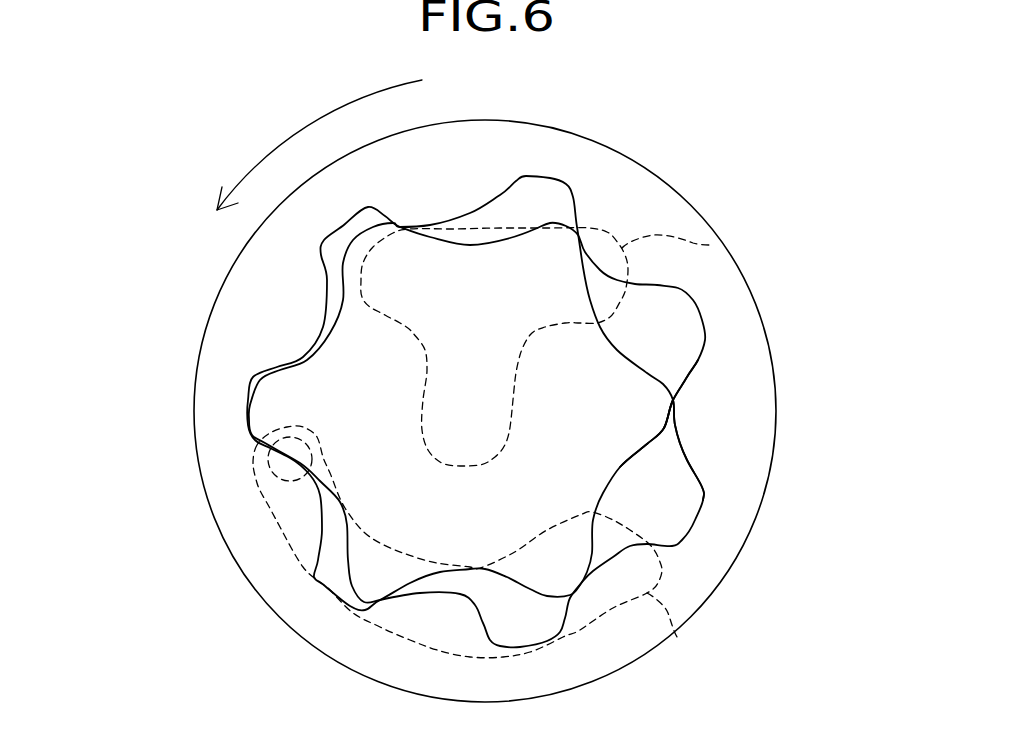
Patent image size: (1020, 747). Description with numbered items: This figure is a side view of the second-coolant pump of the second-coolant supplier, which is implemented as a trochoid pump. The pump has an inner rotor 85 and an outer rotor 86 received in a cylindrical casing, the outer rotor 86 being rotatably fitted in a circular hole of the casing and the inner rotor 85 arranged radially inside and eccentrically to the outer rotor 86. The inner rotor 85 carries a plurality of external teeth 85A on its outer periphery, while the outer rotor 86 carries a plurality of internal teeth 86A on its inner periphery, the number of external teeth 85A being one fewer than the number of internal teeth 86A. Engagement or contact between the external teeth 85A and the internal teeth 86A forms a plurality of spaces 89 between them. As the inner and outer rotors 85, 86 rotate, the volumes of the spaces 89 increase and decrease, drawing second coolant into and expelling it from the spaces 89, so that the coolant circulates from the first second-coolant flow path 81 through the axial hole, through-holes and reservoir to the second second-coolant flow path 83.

The first second-coolant flow path 81 is at (713, 245).
The second second-coolant flow path 83 is at (677, 637).
The inner rotor 85 is at (613, 387).
The external teeth 85A is at (663, 378).
The outer rotor 86 is at (652, 200).
The internal teeth 86A is at (471, 214).
The spaces 89 is at (667, 483).